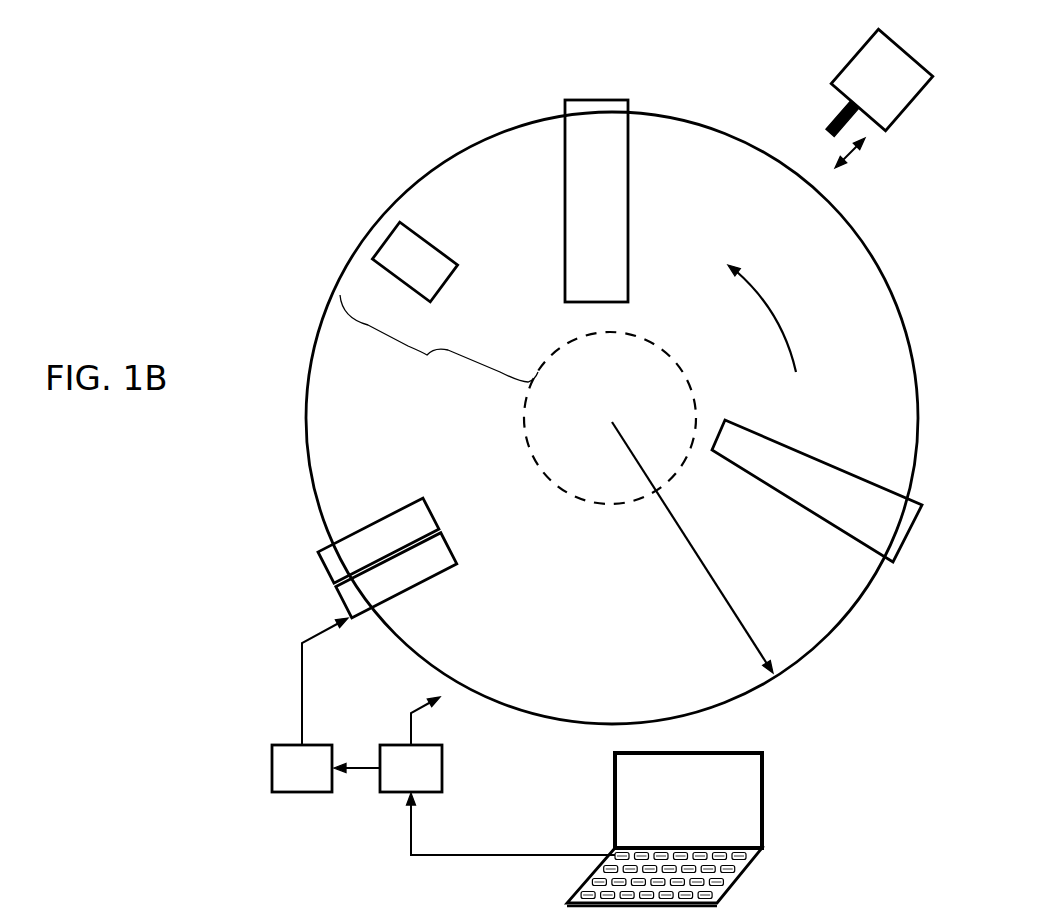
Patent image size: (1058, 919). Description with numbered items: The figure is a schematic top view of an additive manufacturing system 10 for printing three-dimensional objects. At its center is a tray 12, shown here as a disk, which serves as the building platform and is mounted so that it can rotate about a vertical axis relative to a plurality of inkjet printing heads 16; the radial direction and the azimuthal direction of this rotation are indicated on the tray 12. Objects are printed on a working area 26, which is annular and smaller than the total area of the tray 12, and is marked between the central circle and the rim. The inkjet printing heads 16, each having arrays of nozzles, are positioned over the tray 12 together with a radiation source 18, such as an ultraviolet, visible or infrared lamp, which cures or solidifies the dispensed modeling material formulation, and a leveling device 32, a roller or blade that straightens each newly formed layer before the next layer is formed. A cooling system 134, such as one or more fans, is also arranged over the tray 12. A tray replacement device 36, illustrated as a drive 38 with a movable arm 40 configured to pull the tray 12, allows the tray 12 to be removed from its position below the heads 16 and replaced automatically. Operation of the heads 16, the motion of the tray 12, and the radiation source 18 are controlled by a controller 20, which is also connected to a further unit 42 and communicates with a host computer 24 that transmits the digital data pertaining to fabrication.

The system 10 is at (248, 132).
The tray 12 is at (605, 652).
The inkjet printing heads 16 is at (360, 600).
The radiation source 18 is at (604, 228).
The controller 20 is at (388, 744).
The host computer 24 is at (697, 815).
The working area 26 is at (439, 346).
The leveling device 32 is at (870, 518).
The tray replacement device 36 is at (833, 94).
The drive 38 is at (893, 92).
The movable arm 40 is at (840, 118).
The drive unit 42 is at (310, 705).
The cooling system 134 is at (414, 262).